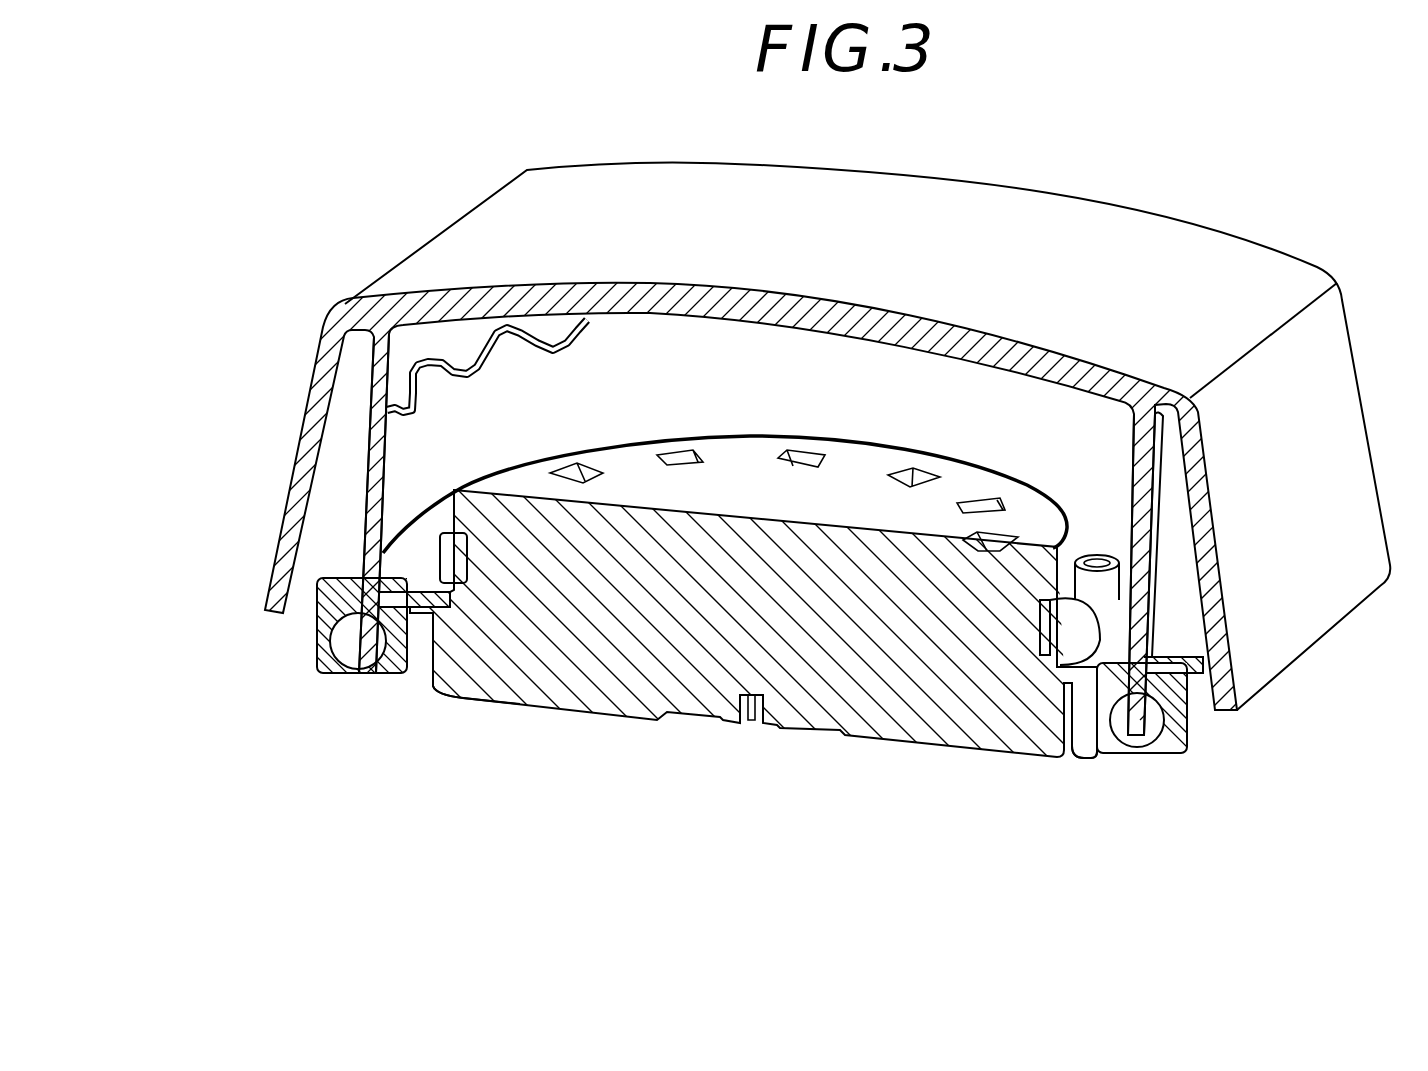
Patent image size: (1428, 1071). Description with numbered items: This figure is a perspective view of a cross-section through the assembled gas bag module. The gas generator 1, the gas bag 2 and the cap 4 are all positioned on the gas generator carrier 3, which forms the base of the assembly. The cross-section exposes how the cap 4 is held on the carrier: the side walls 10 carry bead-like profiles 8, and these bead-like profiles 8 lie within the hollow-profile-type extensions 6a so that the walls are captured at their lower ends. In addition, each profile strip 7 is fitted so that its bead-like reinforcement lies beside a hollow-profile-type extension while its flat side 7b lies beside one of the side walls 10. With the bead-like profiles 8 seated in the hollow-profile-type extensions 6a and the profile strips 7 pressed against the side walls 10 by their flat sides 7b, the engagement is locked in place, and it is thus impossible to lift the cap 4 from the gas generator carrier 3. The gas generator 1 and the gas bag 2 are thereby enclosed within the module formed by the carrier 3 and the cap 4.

The gas generator 1 is at (957, 712).
The gas bag 2 is at (655, 358).
The gas generator carrier 3 is at (1093, 678).
The cap 4 is at (320, 402).
The hollow-profile-type extension 6a is at (427, 694).
The profile strip 7 is at (350, 643).
The flat side 7b is at (355, 613).
The bead-like profile 8 is at (373, 643).
The side wall 10 is at (370, 523).